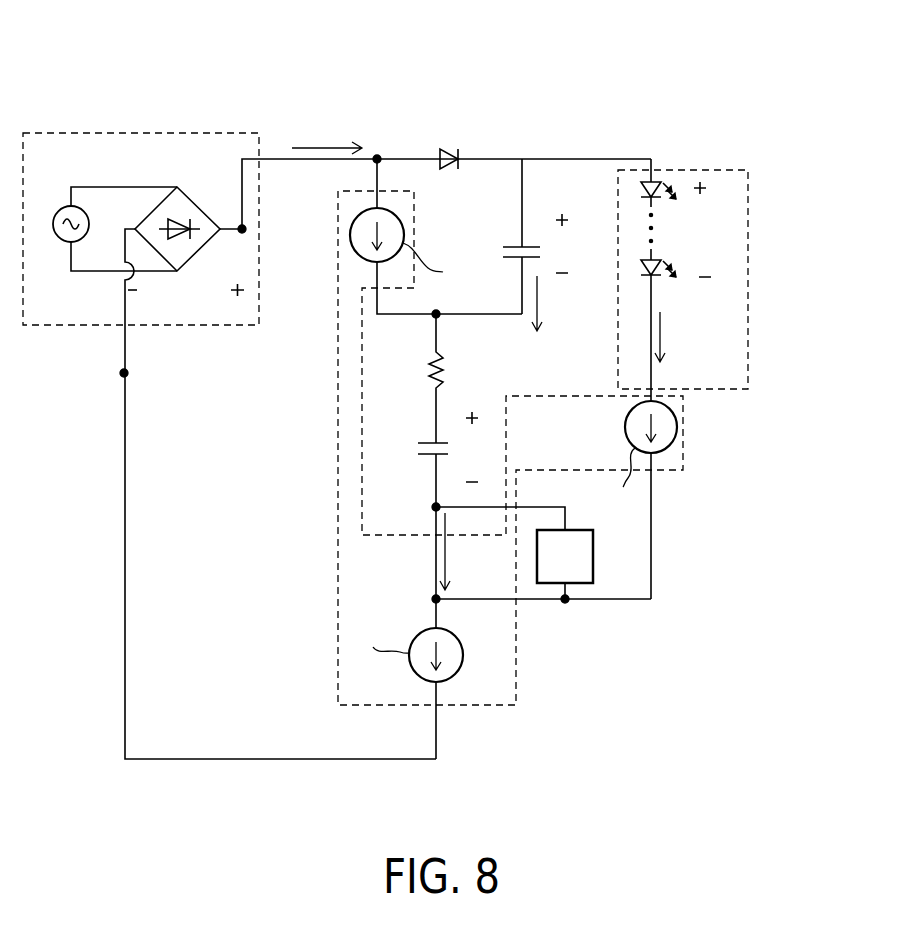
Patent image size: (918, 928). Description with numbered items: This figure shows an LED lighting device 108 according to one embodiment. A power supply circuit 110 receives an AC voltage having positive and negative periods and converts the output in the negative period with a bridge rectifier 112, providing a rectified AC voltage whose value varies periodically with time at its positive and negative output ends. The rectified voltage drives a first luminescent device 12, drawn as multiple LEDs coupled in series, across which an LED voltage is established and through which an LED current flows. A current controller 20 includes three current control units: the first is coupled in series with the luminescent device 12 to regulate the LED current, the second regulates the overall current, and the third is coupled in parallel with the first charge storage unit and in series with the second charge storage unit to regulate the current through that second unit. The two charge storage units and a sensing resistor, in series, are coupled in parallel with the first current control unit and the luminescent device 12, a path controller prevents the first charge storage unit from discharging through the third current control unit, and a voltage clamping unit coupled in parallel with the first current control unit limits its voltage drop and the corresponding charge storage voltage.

The LED lighting device 108 is at (702, 80).
The power supply circuit 110 is at (126, 133).
The bridge rectifier 112 is at (198, 206).
The first luminescent device 12 is at (748, 273).
The current controller 20 is at (338, 480).